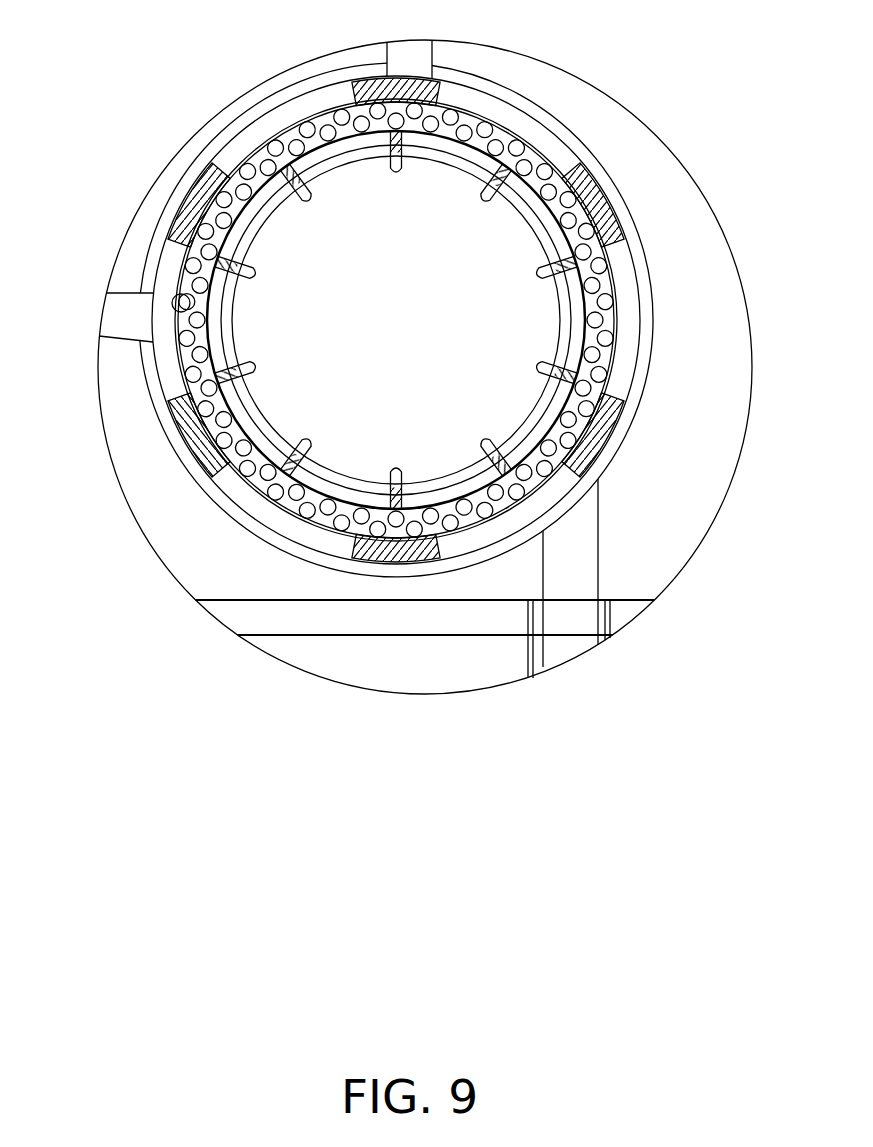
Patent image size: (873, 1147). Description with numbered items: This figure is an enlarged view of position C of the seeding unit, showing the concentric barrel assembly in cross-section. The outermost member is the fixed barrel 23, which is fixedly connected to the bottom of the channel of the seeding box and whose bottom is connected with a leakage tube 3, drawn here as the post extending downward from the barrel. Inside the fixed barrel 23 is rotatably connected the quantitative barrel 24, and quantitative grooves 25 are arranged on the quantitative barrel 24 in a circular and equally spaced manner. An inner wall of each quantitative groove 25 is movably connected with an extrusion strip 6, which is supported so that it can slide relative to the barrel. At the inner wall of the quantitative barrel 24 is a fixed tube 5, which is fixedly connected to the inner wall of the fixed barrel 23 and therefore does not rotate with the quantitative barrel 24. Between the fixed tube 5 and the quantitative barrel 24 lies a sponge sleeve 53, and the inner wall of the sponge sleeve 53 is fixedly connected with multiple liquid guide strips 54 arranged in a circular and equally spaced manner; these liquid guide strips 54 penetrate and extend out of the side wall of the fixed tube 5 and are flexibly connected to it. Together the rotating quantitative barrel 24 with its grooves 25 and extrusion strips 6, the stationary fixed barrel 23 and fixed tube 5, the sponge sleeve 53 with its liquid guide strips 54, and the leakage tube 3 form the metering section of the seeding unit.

The position C is at (722, 216).
The quantitative groove 25 is at (264, 126).
The fixed barrel 23 is at (212, 514).
The quantitative barrel 24 is at (178, 424).
The sponge sleeve 53 is at (186, 262).
The extrusion strip 6 is at (168, 299).
The fixed tube 5 is at (264, 426).
The liquid guide strip 54 is at (397, 178).
The leakage tube 3 is at (582, 560).